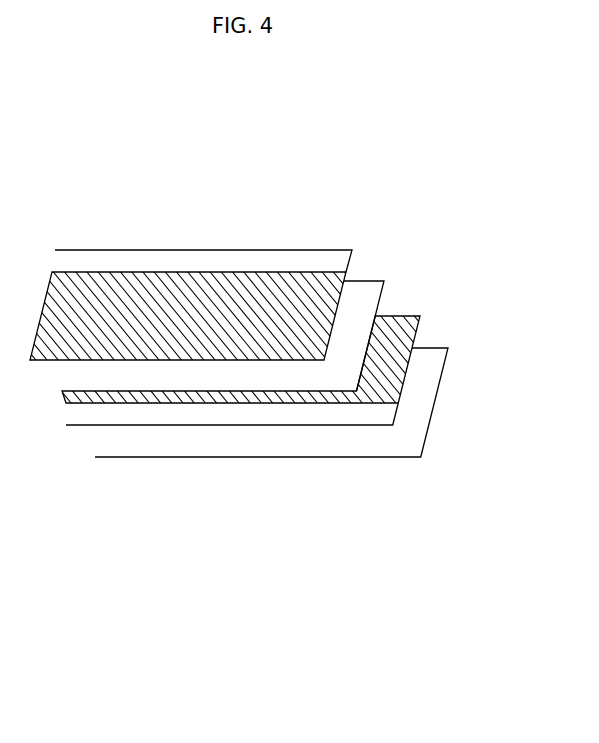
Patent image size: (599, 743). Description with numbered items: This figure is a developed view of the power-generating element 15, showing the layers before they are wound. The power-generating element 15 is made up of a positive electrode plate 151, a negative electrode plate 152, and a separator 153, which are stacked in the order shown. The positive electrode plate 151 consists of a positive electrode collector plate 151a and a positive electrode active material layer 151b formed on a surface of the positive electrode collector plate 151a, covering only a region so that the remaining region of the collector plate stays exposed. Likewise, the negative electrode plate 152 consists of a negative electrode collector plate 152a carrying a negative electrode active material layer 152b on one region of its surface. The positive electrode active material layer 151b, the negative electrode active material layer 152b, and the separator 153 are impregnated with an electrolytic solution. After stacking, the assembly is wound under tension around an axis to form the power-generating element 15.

The power-generating element 15 is at (100, 504).
The positive electrode plate 151 is at (193, 184).
The positive electrode collector plate 151a is at (162, 262).
The positive electrode active material layer 151b is at (90, 305).
The negative electrode plate 152 is at (398, 513).
The negative electrode collector plate 152a is at (287, 415).
The negative electrode active material layer 152b is at (377, 380).
The separator 153 is at (363, 293).